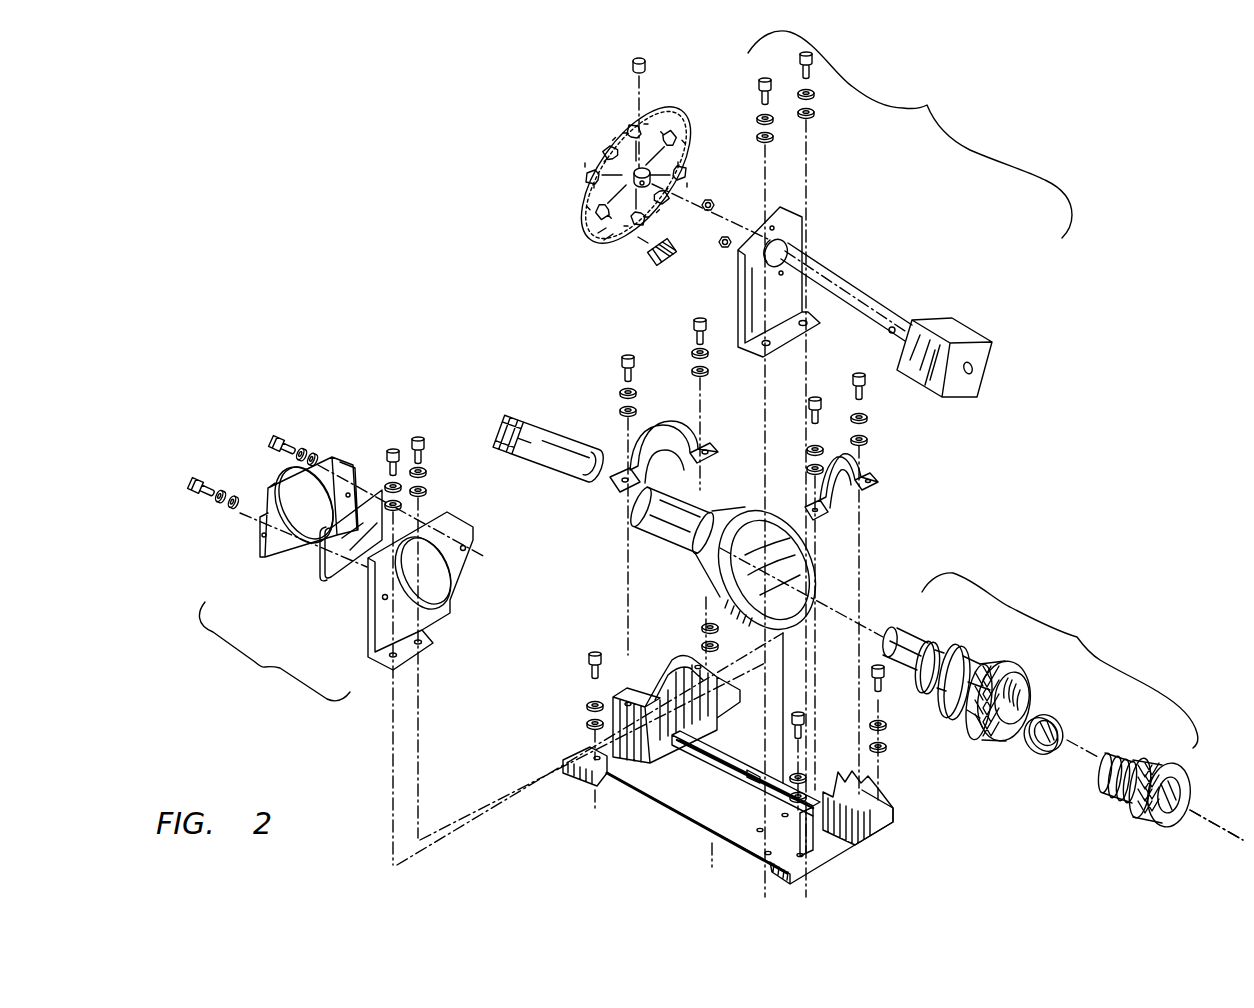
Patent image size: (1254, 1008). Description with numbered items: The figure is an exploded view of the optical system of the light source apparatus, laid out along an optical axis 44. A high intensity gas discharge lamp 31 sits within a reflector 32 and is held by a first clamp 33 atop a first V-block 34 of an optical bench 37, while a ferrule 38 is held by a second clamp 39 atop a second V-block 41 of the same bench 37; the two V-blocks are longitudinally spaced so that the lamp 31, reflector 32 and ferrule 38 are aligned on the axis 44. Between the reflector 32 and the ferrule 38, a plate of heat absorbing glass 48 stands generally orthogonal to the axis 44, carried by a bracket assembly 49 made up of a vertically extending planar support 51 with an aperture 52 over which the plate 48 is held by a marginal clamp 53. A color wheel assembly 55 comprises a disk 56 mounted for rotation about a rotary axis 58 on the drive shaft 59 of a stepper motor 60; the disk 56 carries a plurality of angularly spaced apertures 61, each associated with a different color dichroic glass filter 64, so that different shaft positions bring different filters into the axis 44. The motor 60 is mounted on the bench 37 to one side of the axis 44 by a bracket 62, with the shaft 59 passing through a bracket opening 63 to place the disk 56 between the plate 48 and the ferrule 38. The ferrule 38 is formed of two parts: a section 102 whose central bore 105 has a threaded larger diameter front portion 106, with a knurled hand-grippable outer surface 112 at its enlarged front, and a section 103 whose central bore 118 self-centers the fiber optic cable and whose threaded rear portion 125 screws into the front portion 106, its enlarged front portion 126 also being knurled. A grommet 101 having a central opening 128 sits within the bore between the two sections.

The lamp 31 is at (565, 463).
The reflector 32 is at (690, 537).
The first clamp 33 is at (657, 433).
The first V-block 34 is at (697, 717).
The optical bench 37 is at (683, 793).
The ferrule 38 is at (1060, 660).
The second clamp 39 is at (857, 468).
The second V-block 41 is at (880, 797).
The optical axis 44 is at (1217, 827).
The plate of heat absorbing glass 48 is at (340, 562).
The bracket assembly 49 is at (274, 651).
The planar support 51 is at (637, 178).
The aperture 52 is at (432, 563).
The marginal clamp 53 is at (323, 457).
The color wheel assembly 55 is at (910, 134).
The disk 56 is at (610, 140).
The rotary axis 58 is at (872, 307).
The drive shaft 59 is at (890, 332).
The stepper motor 60 is at (980, 357).
The apertures 61 is at (613, 237).
The bracket 62 is at (792, 227).
The bracket opening 63 is at (780, 252).
The dichroic glass filter 64 is at (665, 262).
The grommet 101 is at (1033, 743).
The section 102 is at (977, 675).
The section 103 is at (1130, 760).
The central bore 105 is at (1025, 703).
The front portion 106 is at (1010, 743).
The knurled outer surface 112 is at (992, 682).
The central bore 118 is at (1165, 827).
The rear portion 125 is at (1113, 793).
The front portion 126 is at (1175, 765).
The central opening 128 is at (1053, 753).